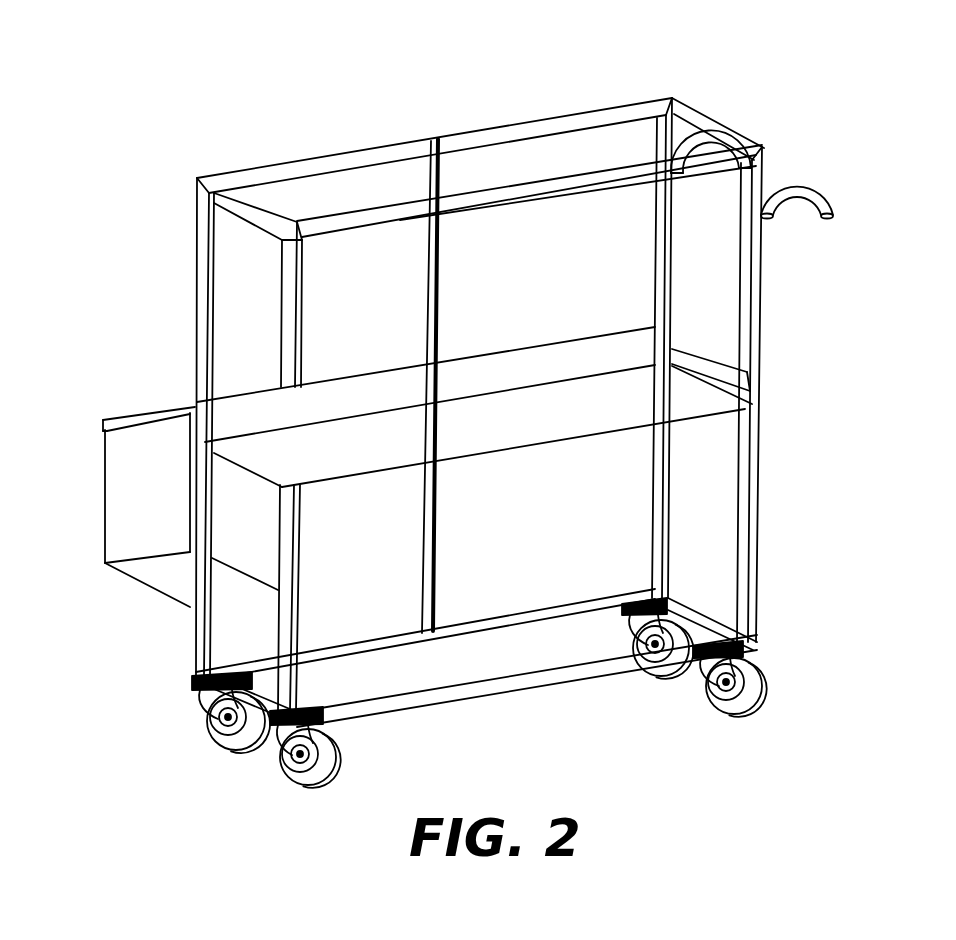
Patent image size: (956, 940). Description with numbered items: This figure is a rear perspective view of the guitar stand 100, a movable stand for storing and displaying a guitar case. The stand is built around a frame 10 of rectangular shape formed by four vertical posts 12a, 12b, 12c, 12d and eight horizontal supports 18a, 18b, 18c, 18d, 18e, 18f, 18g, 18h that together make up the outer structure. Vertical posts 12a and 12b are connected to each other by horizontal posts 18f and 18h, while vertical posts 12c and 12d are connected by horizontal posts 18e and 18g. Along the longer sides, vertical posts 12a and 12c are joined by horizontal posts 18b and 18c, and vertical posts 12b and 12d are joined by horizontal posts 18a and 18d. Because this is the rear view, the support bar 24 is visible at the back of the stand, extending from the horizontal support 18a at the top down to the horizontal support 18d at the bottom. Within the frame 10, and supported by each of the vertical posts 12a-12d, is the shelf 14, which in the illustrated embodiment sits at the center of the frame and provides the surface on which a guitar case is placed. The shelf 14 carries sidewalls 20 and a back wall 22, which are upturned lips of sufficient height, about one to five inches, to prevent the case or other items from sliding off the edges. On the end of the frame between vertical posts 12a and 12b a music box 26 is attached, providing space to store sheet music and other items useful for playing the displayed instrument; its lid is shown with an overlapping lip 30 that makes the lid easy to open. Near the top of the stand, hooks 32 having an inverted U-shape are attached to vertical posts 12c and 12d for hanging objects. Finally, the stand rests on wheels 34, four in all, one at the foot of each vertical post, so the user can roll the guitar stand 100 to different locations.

The guitar stand 100 is at (198, 98).
The frame 10 is at (380, 78).
The vertical post 12a is at (302, 298).
The vertical post 12b is at (196, 316).
The vertical post 12c is at (760, 247).
The vertical post 12d is at (673, 245).
The shelf 14 is at (535, 440).
The horizontal support 18a is at (530, 126).
The horizontal support 18b is at (497, 195).
The horizontal support 18c is at (497, 685).
The horizontal support 18d is at (375, 635).
The horizontal support 18e is at (687, 112).
The horizontal support 18f is at (263, 207).
The horizontal support 18g is at (763, 627).
The horizontal support 18h is at (268, 707).
The sidewalls 20 is at (720, 372).
The back wall 22 is at (555, 355).
The support bar 24 is at (436, 282).
The music box 26 is at (107, 517).
The overlapping lip 30 is at (107, 420).
The hook 32 is at (728, 132).
The wheel 34 is at (203, 728).